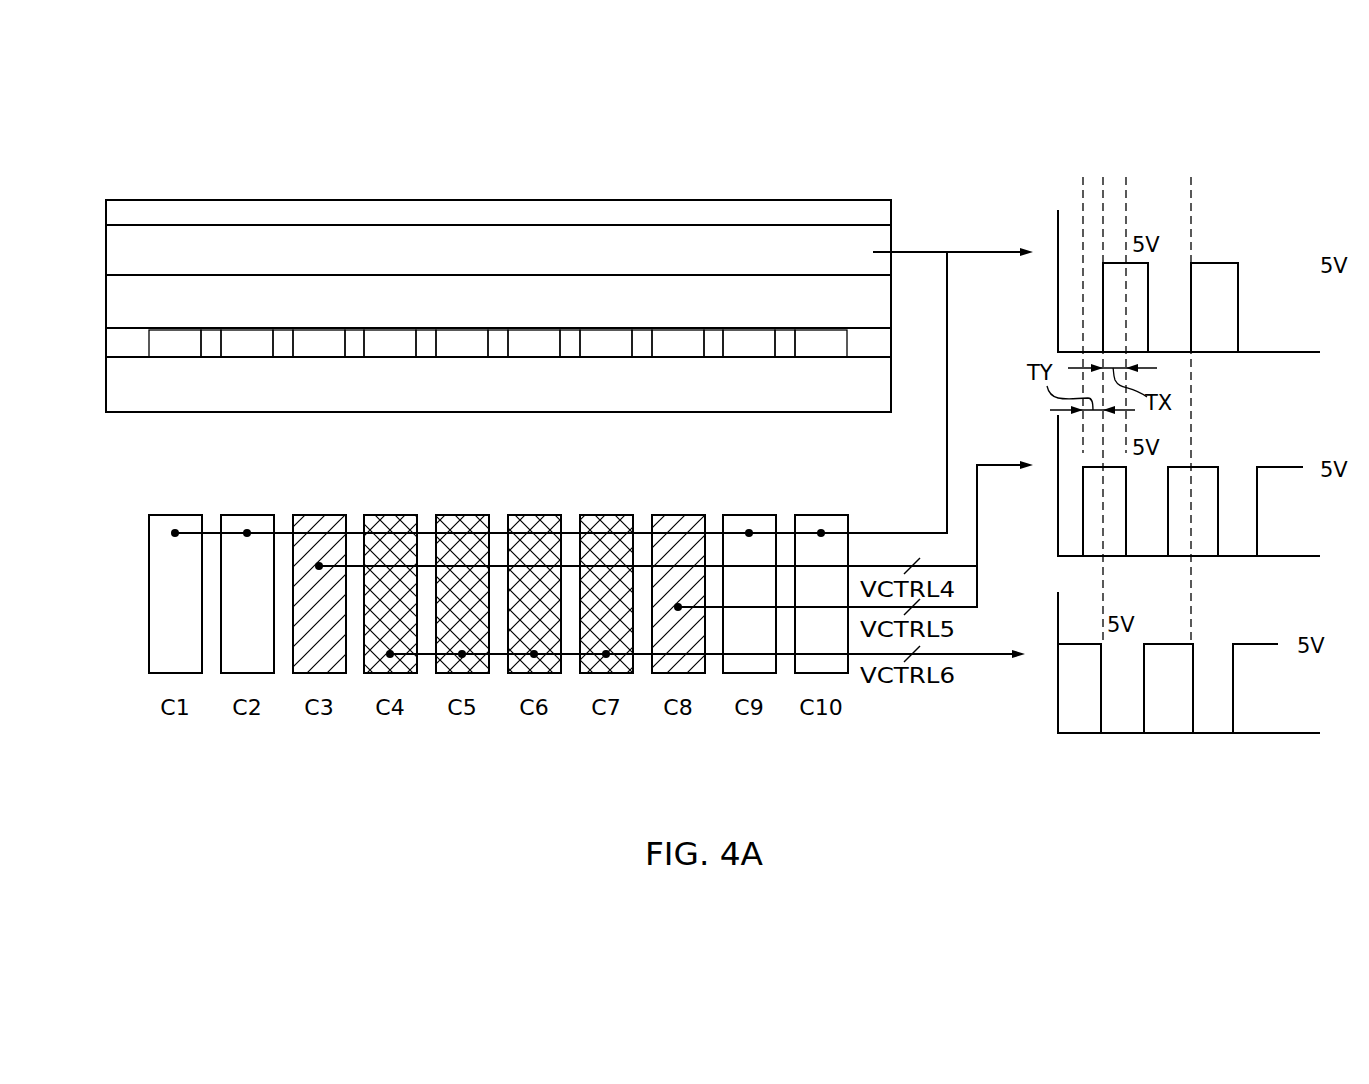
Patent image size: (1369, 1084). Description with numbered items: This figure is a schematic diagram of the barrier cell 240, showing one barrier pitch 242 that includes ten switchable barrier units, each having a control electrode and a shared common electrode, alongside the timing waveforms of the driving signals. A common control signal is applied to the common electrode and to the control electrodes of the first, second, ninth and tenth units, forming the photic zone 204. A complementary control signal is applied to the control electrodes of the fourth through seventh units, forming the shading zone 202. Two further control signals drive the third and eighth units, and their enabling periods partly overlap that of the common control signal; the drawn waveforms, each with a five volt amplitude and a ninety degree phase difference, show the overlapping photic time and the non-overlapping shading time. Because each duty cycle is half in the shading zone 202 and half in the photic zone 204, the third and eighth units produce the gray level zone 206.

The barrier cell 240 is at (93, 201).
The barrier pitch 242 is at (149, 358).
The shading zone 202 is at (617, 663).
The gray level zone 206 is at (688, 662).
The photic zone 204 is at (828, 663).